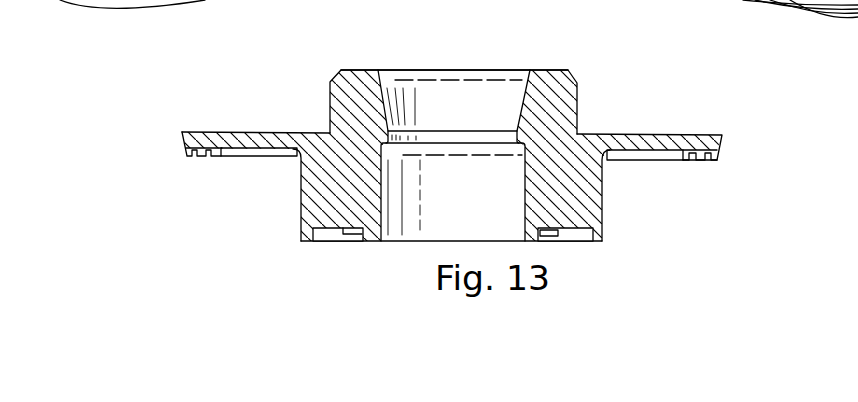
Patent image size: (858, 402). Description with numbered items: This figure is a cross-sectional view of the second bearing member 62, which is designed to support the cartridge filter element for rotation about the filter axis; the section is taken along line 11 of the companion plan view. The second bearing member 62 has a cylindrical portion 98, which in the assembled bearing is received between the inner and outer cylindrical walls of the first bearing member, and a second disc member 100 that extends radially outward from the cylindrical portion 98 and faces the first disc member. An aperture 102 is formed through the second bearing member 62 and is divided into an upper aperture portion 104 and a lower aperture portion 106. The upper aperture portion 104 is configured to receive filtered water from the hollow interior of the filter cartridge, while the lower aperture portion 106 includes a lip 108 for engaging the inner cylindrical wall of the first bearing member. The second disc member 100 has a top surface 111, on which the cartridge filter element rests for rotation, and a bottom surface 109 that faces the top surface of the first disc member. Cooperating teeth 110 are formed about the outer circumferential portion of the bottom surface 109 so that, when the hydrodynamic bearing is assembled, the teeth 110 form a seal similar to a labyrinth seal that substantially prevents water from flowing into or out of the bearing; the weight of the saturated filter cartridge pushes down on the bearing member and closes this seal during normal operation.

The adjacent figure numeral 11 is at (14, 21).
The second bearing member 62 is at (309, 116).
The cylindrical portion 98 is at (603, 212).
The second disc member 100 is at (668, 134).
The aperture 102 is at (462, 66).
The upper aperture portion 104 is at (476, 119).
The lower aperture portion 106 is at (493, 207).
The lip 108 is at (392, 160).
The bottom surface 109 is at (252, 163).
The cooperating teeth 110 is at (700, 170).
The top surface 111 is at (217, 124).